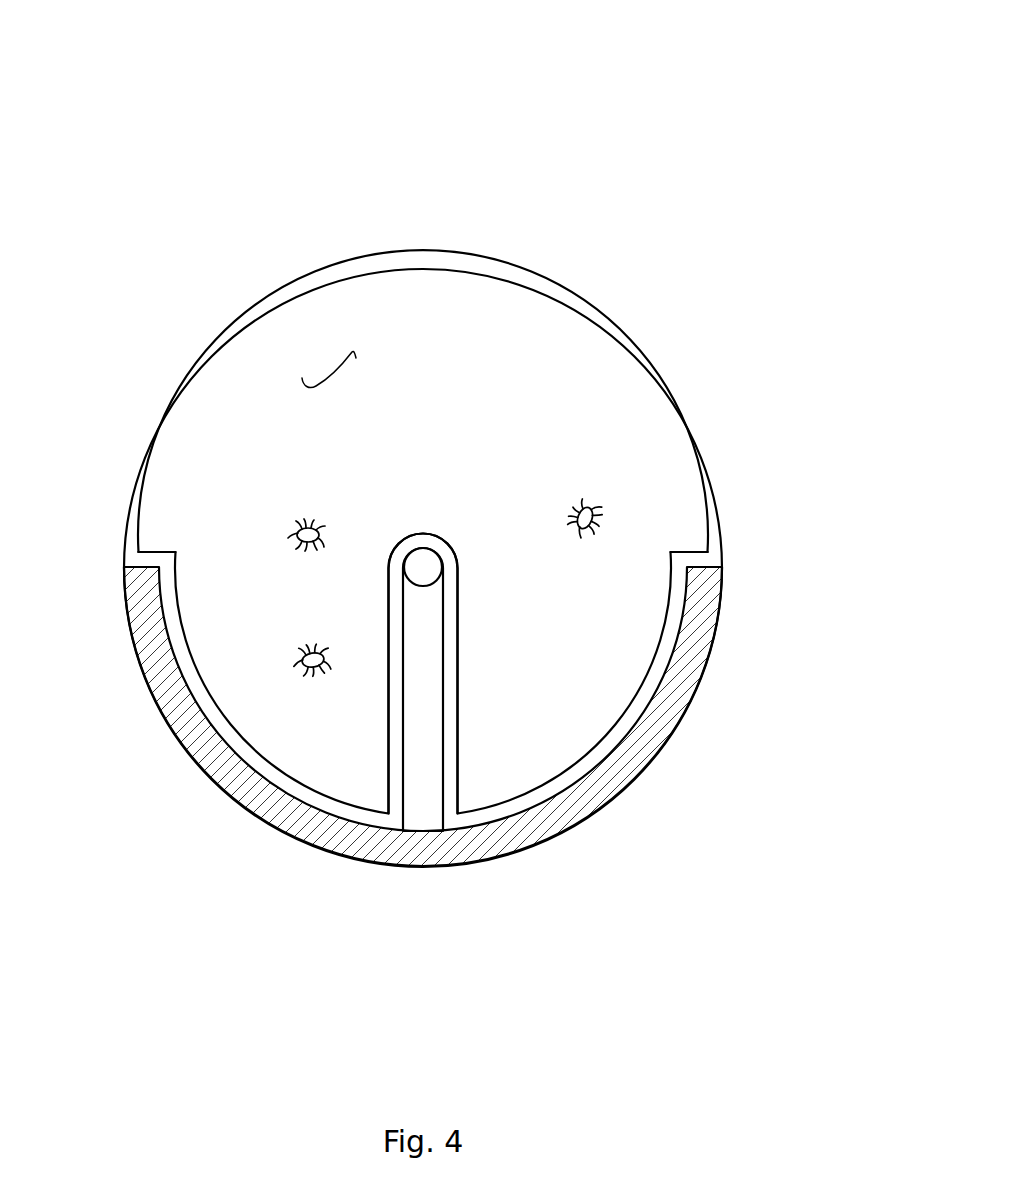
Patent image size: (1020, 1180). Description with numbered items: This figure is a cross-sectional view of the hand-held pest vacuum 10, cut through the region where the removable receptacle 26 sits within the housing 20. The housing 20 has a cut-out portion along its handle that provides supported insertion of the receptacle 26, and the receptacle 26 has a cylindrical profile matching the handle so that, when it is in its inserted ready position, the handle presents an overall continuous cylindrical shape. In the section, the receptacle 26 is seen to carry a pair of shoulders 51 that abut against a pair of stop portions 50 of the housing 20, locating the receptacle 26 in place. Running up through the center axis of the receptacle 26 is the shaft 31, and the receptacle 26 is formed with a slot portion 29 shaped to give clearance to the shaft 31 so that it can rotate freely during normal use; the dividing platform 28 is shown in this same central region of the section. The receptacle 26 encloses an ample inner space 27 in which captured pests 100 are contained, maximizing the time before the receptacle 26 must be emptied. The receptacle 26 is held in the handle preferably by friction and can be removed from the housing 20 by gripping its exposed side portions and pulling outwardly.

The hand-held pest vacuum 10 is at (700, 130).
The housing 20 is at (417, 715).
The receptacle 26 is at (557, 315).
The inner space 27 is at (327, 375).
The dividing platform 28 is at (421, 818).
The slot 29 is at (402, 727).
The shaft 31 is at (425, 566).
The stop 50 is at (148, 575).
The shoulder 51 is at (138, 558).
The pest 100 is at (298, 653).